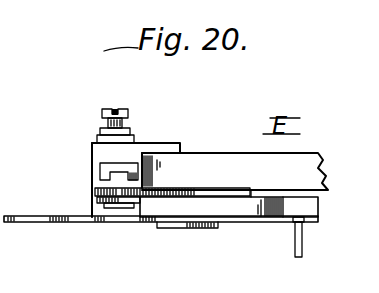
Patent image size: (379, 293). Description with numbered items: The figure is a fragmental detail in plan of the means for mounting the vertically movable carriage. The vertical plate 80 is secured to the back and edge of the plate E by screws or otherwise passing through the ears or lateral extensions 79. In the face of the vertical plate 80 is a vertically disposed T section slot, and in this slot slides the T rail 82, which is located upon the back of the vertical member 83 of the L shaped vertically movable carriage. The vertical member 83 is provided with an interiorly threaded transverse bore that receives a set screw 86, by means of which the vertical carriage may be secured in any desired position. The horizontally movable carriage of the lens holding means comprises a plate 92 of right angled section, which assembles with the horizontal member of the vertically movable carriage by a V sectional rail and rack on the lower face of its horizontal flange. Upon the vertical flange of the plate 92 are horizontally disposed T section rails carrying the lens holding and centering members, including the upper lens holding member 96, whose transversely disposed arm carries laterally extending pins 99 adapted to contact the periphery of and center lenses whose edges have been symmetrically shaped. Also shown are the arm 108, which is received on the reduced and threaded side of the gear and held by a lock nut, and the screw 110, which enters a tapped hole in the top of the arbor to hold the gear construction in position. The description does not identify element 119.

The ears or lateral extensions 79 is at (277, 143).
The vertical plate 80 is at (205, 135).
The T rail 82 is at (100, 166).
The vertical member 83 is at (93, 185).
The set screw 86 is at (113, 200).
The plate 92 is at (212, 193).
The upper lens holding and centering member 96 is at (240, 207).
The pins 99 is at (303, 245).
The arm 108 is at (32, 222).
The screw 110 is at (170, 229).
The screw 119 is at (100, 134).